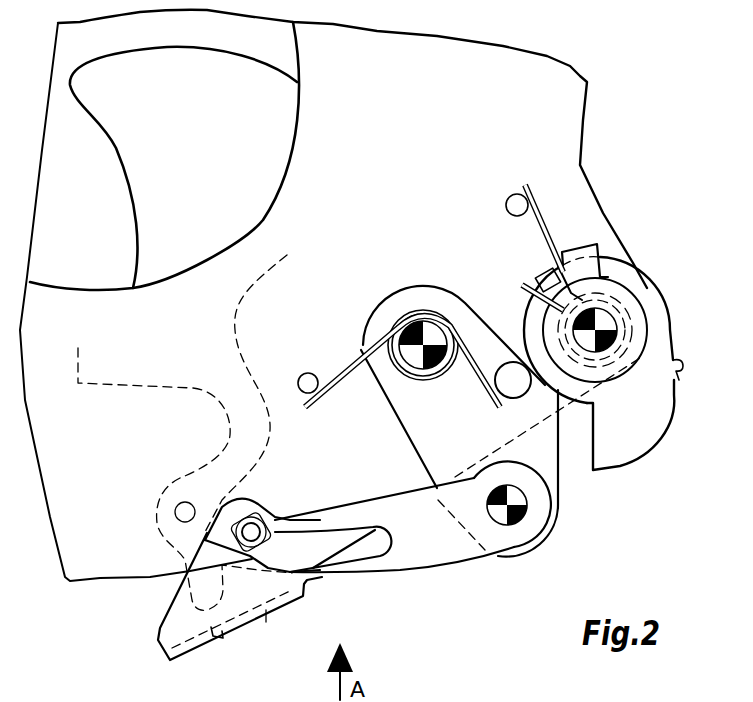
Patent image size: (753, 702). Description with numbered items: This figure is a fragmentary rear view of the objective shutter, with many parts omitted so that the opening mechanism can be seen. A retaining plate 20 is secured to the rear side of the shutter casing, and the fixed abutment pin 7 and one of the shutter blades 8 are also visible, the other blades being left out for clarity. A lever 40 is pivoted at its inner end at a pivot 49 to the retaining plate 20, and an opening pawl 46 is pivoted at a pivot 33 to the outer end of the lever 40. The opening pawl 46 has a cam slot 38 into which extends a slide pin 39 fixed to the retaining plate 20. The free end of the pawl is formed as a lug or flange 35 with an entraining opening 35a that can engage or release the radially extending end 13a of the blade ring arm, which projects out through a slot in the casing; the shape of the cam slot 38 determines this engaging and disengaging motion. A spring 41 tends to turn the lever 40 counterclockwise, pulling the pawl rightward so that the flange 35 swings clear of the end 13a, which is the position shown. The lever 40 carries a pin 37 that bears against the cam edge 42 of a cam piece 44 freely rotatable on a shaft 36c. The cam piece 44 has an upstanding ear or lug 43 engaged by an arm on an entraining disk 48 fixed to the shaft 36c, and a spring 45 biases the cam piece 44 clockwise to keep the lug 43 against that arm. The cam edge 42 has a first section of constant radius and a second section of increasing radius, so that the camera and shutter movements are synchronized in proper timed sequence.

The fixed abutment pin 7 is at (216, 155).
The shutter blade 8 is at (133, 156).
The radially extending end of blade ring arm 13a is at (185, 593).
The retaining plate 20 is at (100, 545).
The pivot 33 is at (512, 527).
The lug or flange 35 is at (165, 653).
The entraining opening 35a is at (221, 641).
The shaft 36c is at (604, 322).
The pin 37 is at (511, 370).
The cam slot 38 is at (374, 548).
The slide pin 39 is at (258, 530).
The lever 40 is at (551, 474).
The spring 41 is at (352, 362).
The cam edge 42 is at (670, 375).
The upstanding ear or lug 43 is at (546, 282).
The cam piece 44 is at (643, 297).
The spring 45 is at (527, 180).
The opening pawl 46 is at (441, 548).
The entraining disk 48 is at (588, 248).
The pivot 49 is at (430, 340).